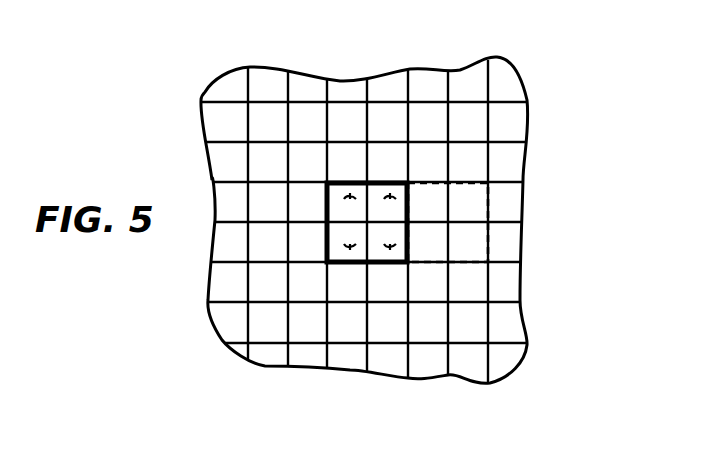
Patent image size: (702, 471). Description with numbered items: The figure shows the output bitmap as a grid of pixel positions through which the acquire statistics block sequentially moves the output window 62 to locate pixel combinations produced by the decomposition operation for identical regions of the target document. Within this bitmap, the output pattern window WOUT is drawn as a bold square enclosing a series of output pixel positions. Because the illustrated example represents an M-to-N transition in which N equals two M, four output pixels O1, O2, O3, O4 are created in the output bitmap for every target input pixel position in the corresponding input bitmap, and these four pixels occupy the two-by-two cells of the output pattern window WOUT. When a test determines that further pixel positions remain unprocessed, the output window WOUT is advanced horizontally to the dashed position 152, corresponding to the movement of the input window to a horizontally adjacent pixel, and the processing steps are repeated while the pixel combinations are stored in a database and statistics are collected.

The window 62 is at (455, 71).
The position 152 is at (450, 183).
The output pattern window WOUT is at (405, 263).
The output pixel O1 is at (350, 194).
The output pixel O2 is at (390, 194).
The output pixel O3 is at (350, 250).
The output pixel O4 is at (390, 250).